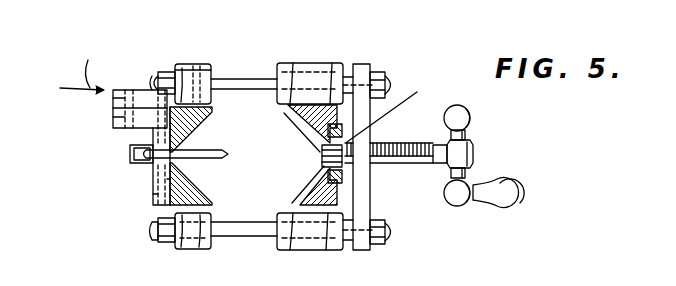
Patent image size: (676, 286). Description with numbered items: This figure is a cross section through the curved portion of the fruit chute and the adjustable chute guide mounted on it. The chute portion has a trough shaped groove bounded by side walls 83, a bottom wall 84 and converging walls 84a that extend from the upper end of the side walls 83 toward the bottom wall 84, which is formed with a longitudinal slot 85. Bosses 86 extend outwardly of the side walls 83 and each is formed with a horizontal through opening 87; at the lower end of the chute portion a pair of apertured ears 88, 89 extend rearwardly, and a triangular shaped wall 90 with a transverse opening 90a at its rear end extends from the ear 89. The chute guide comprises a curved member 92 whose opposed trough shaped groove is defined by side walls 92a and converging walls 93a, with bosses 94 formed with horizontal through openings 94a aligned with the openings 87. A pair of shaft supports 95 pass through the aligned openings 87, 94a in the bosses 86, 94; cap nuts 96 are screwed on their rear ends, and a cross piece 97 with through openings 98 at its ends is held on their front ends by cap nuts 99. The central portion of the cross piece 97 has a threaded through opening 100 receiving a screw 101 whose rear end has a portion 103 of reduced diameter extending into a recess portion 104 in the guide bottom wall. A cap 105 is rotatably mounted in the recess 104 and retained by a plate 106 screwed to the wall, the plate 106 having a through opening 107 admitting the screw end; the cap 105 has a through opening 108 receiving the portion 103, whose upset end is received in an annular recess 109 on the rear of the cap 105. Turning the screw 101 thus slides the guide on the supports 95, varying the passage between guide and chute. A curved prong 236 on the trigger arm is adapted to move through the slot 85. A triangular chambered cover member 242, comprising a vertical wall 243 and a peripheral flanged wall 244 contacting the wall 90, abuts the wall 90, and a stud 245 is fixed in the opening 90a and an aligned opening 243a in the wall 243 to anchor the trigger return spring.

The chambered cover member 242 is at (68, 80).
The stud 245 is at (77, 65).
The vertical wall 243 is at (137, 90).
The aligned opening 243a is at (113, 98).
The transverse opening 90a is at (115, 116).
The triangular shaped wall 90 is at (120, 130).
The peripheral flanged wall 244 is at (153, 92).
The apertured ear 89 is at (130, 153).
The curved prong 236 is at (232, 149).
The converging walls 84a is at (214, 108).
The longitudinal slot 85 is at (182, 146).
The bottom wall 84 is at (167, 179).
The apertured ear 88 is at (155, 194).
The cap nuts 96 is at (172, 226).
The side walls 83 is at (195, 65).
The horizontal through opening 87 is at (183, 65).
The bosses 86 is at (205, 65).
The shaft supports 95 is at (262, 79).
The bosses 94 is at (334, 63).
The curved member 92 is at (318, 64).
The horizontal through openings 94a is at (310, 68).
The side walls 92a is at (330, 247).
The through openings 98 is at (363, 63).
The cap nuts 99 is at (392, 80).
The cross piece 97 is at (370, 180).
The annular recess 109 is at (372, 118).
The reduced diameter portion 103 is at (295, 128).
The converging walls 93a is at (302, 190).
The recess portion 104 is at (330, 151).
The through opening 108 is at (470, 135).
The cap 105 is at (332, 172).
The threaded through opening 100 is at (372, 142).
The screw 101 is at (438, 145).
The through opening 107 is at (375, 167).
The plate 106 is at (368, 186).